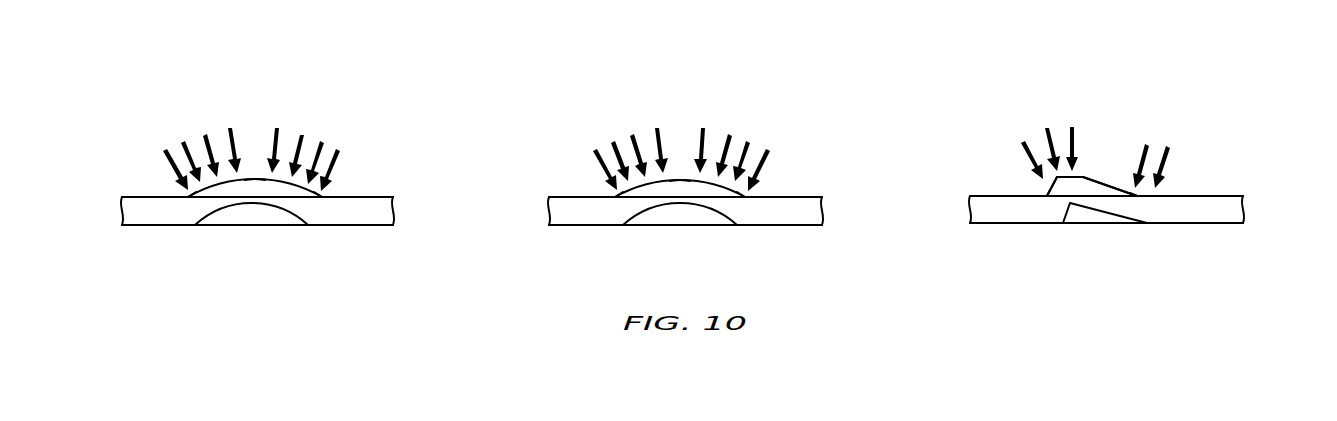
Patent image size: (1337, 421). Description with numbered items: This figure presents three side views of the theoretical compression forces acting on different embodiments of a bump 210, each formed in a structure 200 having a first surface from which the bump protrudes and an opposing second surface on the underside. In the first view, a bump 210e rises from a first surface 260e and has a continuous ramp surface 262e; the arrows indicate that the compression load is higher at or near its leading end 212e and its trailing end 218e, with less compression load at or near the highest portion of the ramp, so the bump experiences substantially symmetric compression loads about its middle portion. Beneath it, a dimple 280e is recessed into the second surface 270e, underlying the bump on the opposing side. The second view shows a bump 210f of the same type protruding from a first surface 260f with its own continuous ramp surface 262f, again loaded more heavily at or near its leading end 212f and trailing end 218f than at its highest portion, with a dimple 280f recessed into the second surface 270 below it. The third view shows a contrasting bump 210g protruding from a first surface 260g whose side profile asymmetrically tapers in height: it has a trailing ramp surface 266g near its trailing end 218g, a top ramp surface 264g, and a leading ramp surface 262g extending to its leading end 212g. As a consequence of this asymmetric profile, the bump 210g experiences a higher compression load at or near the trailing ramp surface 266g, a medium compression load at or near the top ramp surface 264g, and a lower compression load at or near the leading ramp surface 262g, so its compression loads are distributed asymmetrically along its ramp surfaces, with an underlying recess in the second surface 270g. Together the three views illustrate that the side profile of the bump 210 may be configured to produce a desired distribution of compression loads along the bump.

The optical assembly 200 is at (97, 274).
The bump 210 is at (151, 73).
The bump 210e is at (336, 123).
The leading end 212e is at (321, 196).
The trailing end 218e is at (188, 196).
The first surface 260e is at (372, 196).
The continuous ramp surface 262e is at (252, 180).
The second surface 270e is at (365, 225).
The dimple 280e is at (243, 253).
The bump 210f is at (754, 120).
The leading end 212f is at (747, 196).
The trailing end 218f is at (613, 196).
The first surface 260f is at (807, 196).
The continuous ramp surface 262f is at (682, 178).
The second surface 270 is at (800, 226).
The dimple 280f is at (671, 255).
The bump 210g is at (1179, 123).
The leading end 212g is at (1150, 195).
The trailing end 218g is at (1047, 195).
The first surface 260g is at (1227, 195).
The leading ramp surface 262g is at (1100, 180).
The top ramp surface 264g is at (1063, 175).
The trailing ramp surface 266g is at (1048, 175).
The second surface 270g is at (1228, 224).